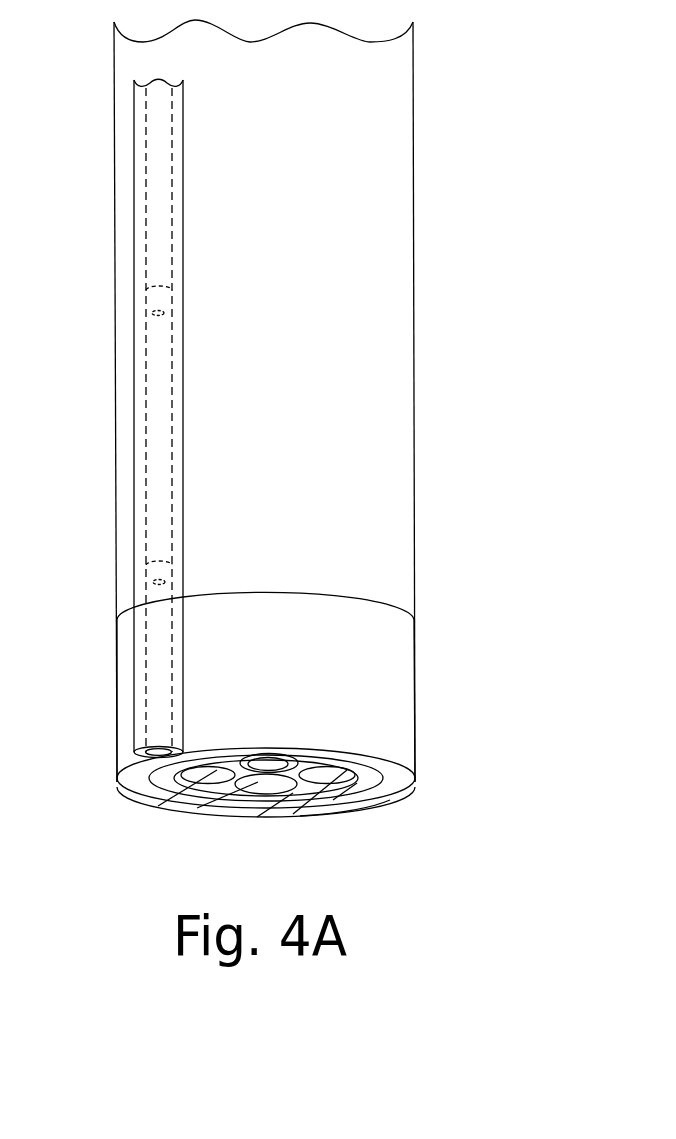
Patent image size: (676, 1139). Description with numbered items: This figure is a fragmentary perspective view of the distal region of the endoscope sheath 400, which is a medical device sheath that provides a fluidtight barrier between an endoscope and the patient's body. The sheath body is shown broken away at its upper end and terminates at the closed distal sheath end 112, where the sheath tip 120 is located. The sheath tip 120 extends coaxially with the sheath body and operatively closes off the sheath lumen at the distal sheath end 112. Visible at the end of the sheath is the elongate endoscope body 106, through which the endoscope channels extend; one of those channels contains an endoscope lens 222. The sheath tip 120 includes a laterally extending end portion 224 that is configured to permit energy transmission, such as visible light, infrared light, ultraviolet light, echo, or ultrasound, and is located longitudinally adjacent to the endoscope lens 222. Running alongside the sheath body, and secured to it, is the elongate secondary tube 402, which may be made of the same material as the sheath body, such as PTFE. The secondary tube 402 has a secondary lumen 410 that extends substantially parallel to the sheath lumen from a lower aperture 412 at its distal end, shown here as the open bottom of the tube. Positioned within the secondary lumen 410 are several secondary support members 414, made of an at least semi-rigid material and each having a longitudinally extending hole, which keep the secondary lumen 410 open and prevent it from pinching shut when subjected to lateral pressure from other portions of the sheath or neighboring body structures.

The endoscope sheath 400 is at (478, 139).
The distal sheath end 112 is at (499, 717).
The sheath tip 120 is at (396, 661).
The endoscope body 106 is at (398, 781).
The endoscope lens 222 is at (277, 765).
The end portion 224 is at (372, 807).
The secondary tube 402 is at (134, 432).
The secondary lumen 410 is at (146, 675).
The secondary support members 414 is at (142, 567).
The lower aperture 412 is at (157, 758).